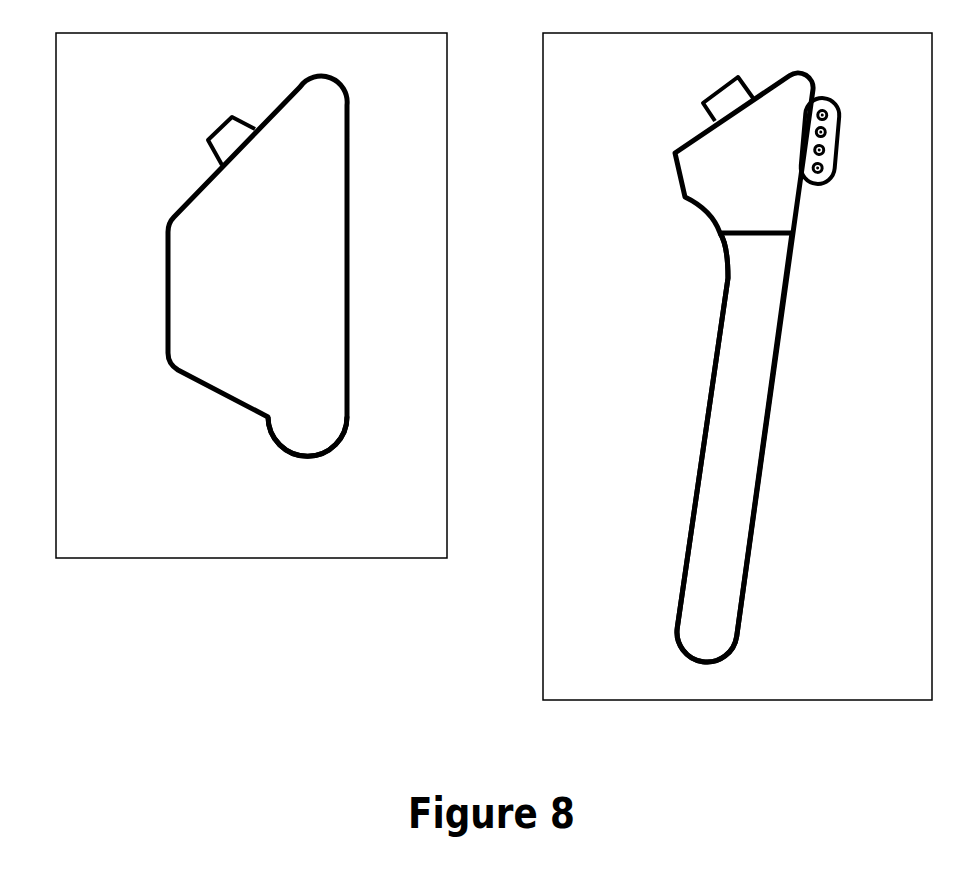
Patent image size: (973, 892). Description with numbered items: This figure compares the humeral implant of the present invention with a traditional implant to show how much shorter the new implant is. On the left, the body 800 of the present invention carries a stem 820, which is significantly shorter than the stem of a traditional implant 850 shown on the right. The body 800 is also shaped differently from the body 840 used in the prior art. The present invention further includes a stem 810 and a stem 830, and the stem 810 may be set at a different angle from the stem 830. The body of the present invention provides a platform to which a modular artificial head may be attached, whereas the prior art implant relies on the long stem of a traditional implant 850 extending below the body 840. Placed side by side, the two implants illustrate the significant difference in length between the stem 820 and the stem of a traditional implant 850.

The body 800 is at (168, 307).
The stem 810 is at (218, 131).
The stem 820 is at (283, 453).
The stem 830 is at (703, 105).
The body 840 is at (713, 228).
The stem of a traditional implant 850 is at (760, 480).